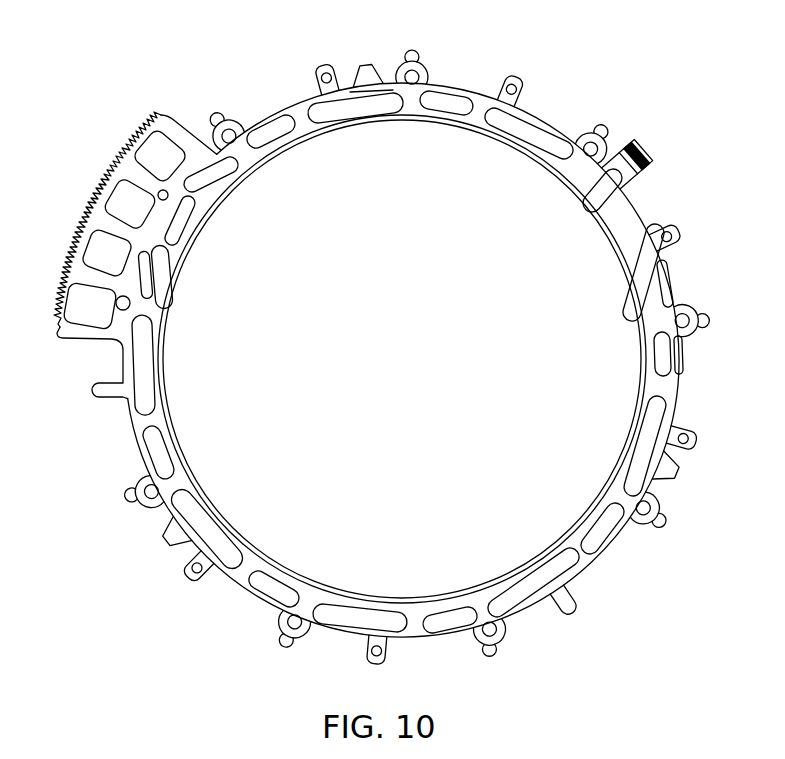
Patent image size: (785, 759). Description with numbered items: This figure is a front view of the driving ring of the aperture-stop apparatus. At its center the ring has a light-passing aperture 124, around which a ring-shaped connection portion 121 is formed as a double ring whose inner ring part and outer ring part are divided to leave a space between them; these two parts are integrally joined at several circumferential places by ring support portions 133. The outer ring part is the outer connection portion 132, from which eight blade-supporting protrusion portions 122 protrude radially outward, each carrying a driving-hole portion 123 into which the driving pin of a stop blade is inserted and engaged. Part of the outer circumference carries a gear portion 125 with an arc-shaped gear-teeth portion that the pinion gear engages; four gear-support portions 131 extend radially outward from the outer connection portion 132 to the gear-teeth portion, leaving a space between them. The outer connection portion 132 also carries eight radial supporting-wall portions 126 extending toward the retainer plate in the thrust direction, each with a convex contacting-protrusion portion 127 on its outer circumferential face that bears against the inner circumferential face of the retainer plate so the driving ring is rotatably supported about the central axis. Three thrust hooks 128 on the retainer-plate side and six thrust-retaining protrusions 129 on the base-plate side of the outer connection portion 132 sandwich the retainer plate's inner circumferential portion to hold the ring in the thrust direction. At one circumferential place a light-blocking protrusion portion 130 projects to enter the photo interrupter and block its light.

The connection portion 121 is at (220, 530).
The blade-supporting protrusion portion 122 is at (303, 637).
The driving-hole portion 123 is at (285, 627).
The light-passing aperture 124 is at (513, 200).
The gear portion 125 is at (112, 157).
The radial supporting-wall portion 126 is at (655, 358).
The contacting-protrusion portion 127 is at (684, 358).
The thrust hook 128 is at (385, 72).
The thrust-retaining protrusion 129 is at (387, 658).
The light-blocking protrusion portion 130 is at (650, 142).
The gear-support portion 131 is at (185, 126).
The outer connection portion 132 is at (137, 463).
The ring support portion 133 is at (143, 417).